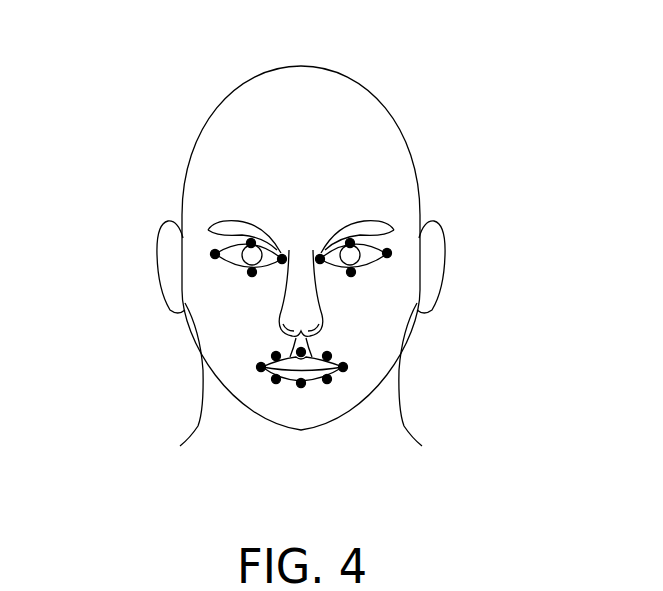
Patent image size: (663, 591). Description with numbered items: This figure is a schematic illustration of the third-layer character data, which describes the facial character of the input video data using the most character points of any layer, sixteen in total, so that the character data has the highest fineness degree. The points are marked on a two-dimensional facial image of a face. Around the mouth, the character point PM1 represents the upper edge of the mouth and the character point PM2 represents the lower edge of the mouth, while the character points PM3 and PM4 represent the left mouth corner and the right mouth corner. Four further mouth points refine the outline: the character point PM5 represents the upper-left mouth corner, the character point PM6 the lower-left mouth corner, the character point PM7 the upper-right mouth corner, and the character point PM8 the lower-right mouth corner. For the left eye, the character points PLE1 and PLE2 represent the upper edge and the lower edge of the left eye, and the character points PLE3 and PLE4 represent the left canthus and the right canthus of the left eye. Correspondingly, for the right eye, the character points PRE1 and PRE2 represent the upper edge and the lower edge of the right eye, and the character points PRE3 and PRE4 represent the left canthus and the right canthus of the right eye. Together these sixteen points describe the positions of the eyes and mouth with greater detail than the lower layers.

The character point PRE1 is at (240, 235).
The character point PRE2 is at (238, 272).
The character point PRE3 is at (280, 255).
The character point PRE4 is at (205, 251).
The character point PLE1 is at (361, 234).
The character point PLE2 is at (363, 272).
The character point PLE3 is at (396, 252).
The character point PLE4 is at (322, 256).
The character point PM1 is at (298, 358).
The character point PM2 is at (304, 388).
The character point PM3 is at (353, 367).
The character point PM4 is at (251, 367).
The character point PM5 is at (337, 355).
The character point PM6 is at (337, 380).
The character point PM7 is at (266, 355).
The character point PM8 is at (266, 380).